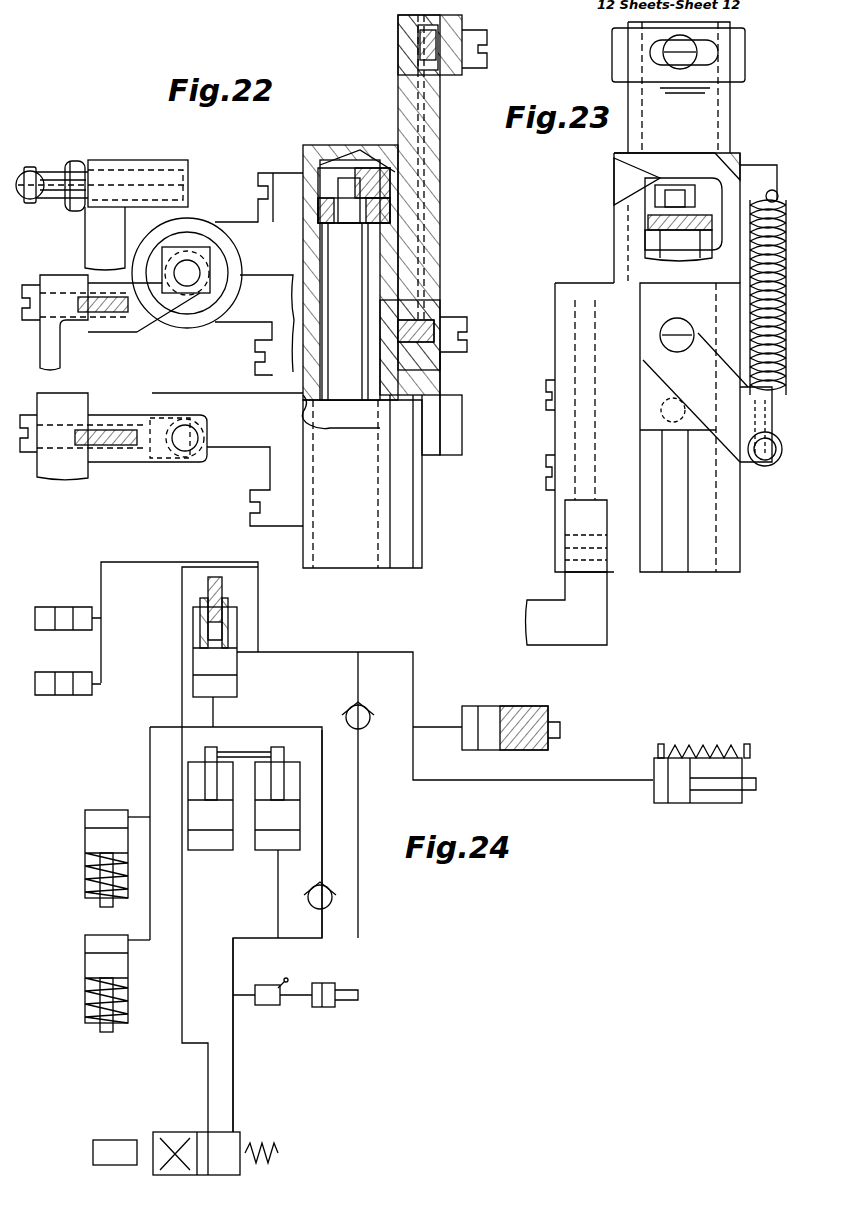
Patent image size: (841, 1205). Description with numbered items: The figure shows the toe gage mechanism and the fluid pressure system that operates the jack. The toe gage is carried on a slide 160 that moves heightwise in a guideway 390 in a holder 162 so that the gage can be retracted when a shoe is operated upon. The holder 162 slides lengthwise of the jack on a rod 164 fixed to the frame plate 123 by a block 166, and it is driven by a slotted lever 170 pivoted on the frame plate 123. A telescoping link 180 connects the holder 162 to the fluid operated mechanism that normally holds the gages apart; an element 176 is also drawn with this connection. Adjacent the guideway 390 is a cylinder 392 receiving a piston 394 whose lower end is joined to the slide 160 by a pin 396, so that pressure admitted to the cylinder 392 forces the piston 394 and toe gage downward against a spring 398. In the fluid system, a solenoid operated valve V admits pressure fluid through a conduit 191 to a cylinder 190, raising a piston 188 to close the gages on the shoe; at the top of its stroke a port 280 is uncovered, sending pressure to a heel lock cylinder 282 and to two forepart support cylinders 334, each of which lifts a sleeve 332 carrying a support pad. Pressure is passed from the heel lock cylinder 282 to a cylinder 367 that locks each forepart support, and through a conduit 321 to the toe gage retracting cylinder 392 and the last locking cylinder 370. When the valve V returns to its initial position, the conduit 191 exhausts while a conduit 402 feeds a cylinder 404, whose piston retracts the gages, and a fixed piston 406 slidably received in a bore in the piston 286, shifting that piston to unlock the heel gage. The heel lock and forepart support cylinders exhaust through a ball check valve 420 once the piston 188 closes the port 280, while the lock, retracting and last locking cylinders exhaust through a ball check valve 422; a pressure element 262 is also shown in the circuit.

In FIG. 22, the bolt 176 is at (34, 170).
In FIG. 22, the telescoping link 180 is at (70, 172).
In FIG. 22, the slotted lever 170 is at (118, 166).
In FIG. 22, the holder 162 is at (237, 218).
In FIG. 22, the rod 164 is at (194, 271).
In FIG. 22, the block 166 is at (140, 325).
In FIG. 22, the frame plate 123 is at (58, 355).
In FIG. 22, the slide 160 is at (398, 92).
In FIG. 23, the slide 160 is at (628, 135).
In FIG. 22, the cylinder 392 is at (375, 248).
In FIG. 23, the cylinder 392 is at (700, 185).
In FIG. 24, the cylinder 392 is at (491, 708).
In FIG. 22, the piston 394 is at (370, 282).
In FIG. 23, the piston 394 is at (660, 240).
In FIG. 22, the pin 396 is at (428, 425).
In FIG. 22, the guideway 390 is at (406, 522).
In FIG. 23, the guideway 390 is at (696, 598).
In FIG. 23, the spring 398 is at (745, 320).
In FIG. 23, the conduit 321 is at (598, 634).
In FIG. 24, the conduit 321 is at (256, 653).
In FIG. 24, the conduit 402 is at (181, 590).
In FIG. 24, the fixed piston 406 is at (222, 590).
In FIG. 24, the piston 286 is at (228, 618).
In FIG. 24, the heel lock cylinder 282 is at (246, 688).
In FIG. 24, the sleeve 332 is at (215, 712).
In FIG. 24, the cylinder 404 is at (180, 790).
In FIG. 24, the piston 188 is at (286, 786).
In FIG. 24, the cylinder 190 is at (308, 846).
In FIG. 24, the port 280 is at (312, 813).
In FIG. 24, the ball check valve 422 is at (372, 705).
In FIG. 24, the ball check valve 420 is at (342, 883).
In FIG. 24, the cylinder 367 is at (67, 638).
In FIG. 24, the forepart support cylinder 334 is at (85, 931).
In FIG. 24, the pressure switch 262 is at (338, 1012).
In FIG. 24, the conduit 191 is at (236, 1060).
In FIG. 24, the last locking cylinder 370 is at (681, 813).
In FIG. 24, the solenoid operated valve V is at (247, 1126).